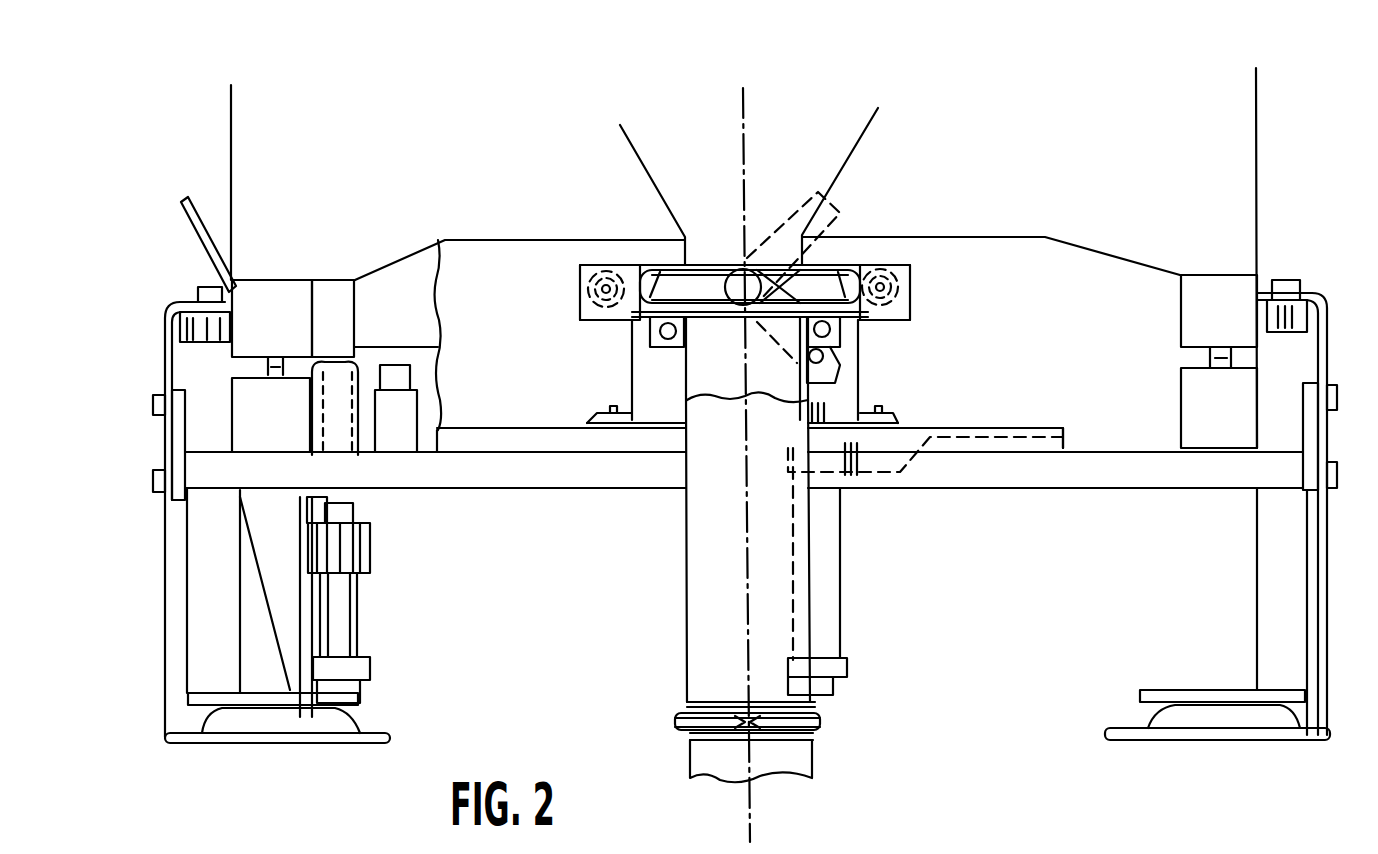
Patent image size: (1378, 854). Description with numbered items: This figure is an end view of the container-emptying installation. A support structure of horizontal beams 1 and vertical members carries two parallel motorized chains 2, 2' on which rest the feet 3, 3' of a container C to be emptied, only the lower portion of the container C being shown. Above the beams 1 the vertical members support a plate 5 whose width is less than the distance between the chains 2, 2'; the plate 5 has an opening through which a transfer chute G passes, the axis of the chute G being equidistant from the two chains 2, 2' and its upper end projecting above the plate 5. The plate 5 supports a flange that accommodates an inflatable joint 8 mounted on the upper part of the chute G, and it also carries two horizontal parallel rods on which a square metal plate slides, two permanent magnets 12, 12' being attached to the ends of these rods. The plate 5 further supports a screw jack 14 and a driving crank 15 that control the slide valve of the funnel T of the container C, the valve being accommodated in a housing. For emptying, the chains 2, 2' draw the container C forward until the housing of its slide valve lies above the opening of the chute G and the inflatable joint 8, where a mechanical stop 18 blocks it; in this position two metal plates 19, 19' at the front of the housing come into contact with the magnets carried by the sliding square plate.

The horizontal beam 1 is at (1183, 473).
The motorized chain 2 is at (1285, 356).
The motorized chain 2' is at (199, 385).
The foot of container 3 is at (1192, 361).
The foot of container 3' is at (280, 366).
The plate 5 is at (1000, 430).
The inflatable joint 8 is at (833, 327).
The permanent magnet 12 is at (568, 292).
The permanent magnet 12' is at (920, 290).
The screw jack 14 is at (823, 587).
The driving crank 15 is at (833, 228).
The mechanical stop 18 is at (353, 463).
The metal plate 19 is at (912, 366).
The metal plate 19' is at (585, 367).
The transfer chute G is at (710, 580).
The funnel T is at (860, 145).
The container C is at (1243, 183).